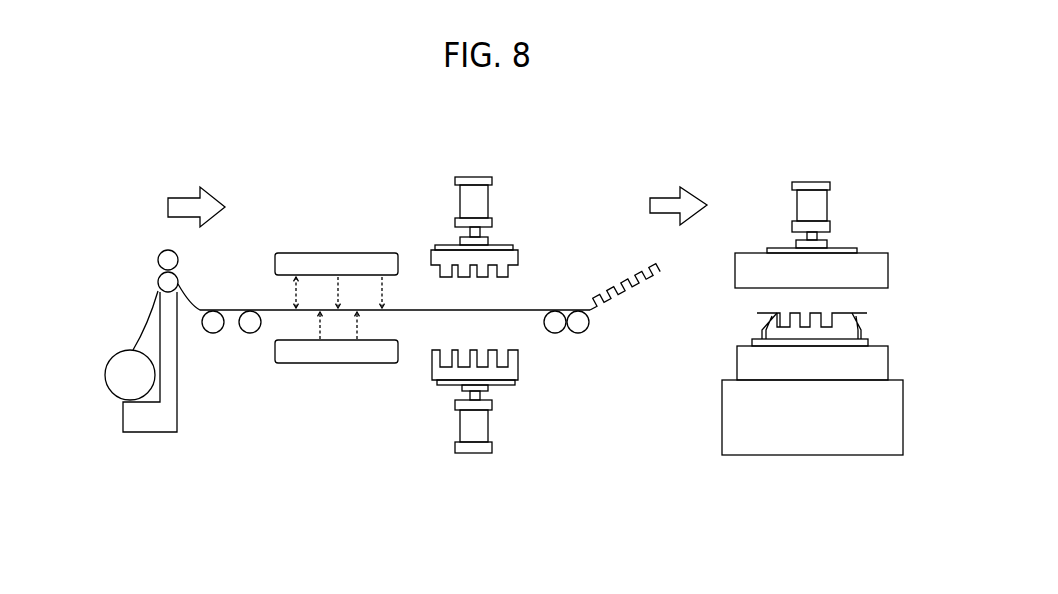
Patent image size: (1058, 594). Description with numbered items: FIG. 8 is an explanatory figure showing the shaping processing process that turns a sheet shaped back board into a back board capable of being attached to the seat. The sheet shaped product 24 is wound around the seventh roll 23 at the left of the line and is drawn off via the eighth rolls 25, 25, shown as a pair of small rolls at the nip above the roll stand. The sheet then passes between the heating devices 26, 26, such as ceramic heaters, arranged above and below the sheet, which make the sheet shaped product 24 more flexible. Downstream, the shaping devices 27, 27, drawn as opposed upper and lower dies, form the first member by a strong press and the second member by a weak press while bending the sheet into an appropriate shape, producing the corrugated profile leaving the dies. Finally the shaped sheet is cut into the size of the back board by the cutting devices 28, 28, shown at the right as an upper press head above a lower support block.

The seventh roll 23 is at (118, 378).
The sheet shaped product 24 is at (140, 331).
The eighth rolls 25 is at (158, 282).
The heating devices 26 is at (347, 235).
The shaping devices 27 is at (518, 230).
The cutting devices 28 is at (870, 232).